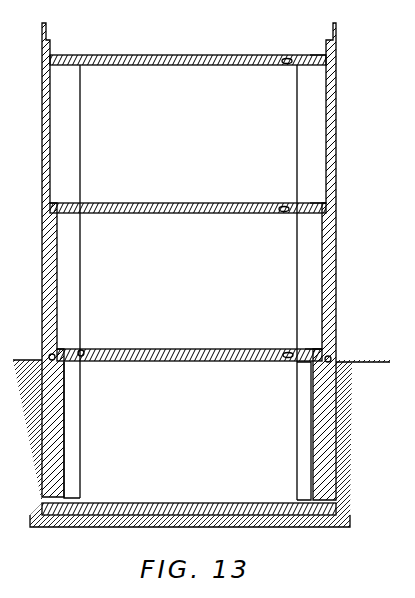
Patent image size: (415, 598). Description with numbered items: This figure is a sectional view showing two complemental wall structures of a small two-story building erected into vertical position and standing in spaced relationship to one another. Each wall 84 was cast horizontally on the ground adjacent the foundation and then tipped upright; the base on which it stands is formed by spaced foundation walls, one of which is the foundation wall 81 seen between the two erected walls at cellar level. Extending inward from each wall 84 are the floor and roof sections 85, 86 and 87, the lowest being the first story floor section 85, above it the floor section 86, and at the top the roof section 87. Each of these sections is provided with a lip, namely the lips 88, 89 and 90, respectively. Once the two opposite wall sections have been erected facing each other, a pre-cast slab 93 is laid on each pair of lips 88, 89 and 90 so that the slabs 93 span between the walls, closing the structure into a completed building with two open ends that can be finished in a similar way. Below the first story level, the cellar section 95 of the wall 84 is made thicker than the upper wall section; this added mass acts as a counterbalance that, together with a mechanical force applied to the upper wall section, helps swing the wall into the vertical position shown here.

The wall 84 is at (353, 254).
The pre-cast slab 93 is at (212, 55).
The lip 90 is at (288, 55).
The lip 89 is at (280, 203).
The lip 88 is at (279, 349).
The roof section 87 is at (310, 56).
The floor section 86 is at (310, 203).
The floor section 85 is at (305, 350).
The cellar section 95 is at (310, 446).
The foundation wall 81 is at (188, 432).